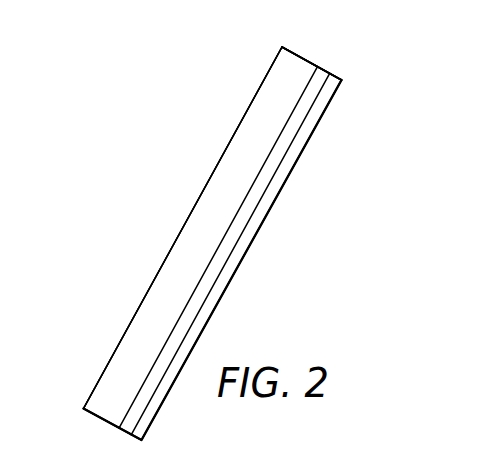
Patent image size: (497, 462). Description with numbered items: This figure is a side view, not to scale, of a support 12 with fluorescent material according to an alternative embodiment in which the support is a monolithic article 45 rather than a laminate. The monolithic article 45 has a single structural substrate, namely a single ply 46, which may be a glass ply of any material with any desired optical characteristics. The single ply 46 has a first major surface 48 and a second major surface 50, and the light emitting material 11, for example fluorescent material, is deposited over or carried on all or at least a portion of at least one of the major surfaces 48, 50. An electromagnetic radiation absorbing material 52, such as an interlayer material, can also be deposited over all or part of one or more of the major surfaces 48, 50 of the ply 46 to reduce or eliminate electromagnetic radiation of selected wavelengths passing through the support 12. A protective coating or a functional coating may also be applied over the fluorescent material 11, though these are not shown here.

The light emitting material 11 is at (266, 215).
The support 12 is at (123, 182).
The monolithic article 45 is at (373, 67).
The single ply 46 is at (301, 55).
The first major surface 48 is at (293, 110).
The second major surface 50 is at (230, 142).
The electromagnetic radiation absorbing material 52 is at (278, 168).